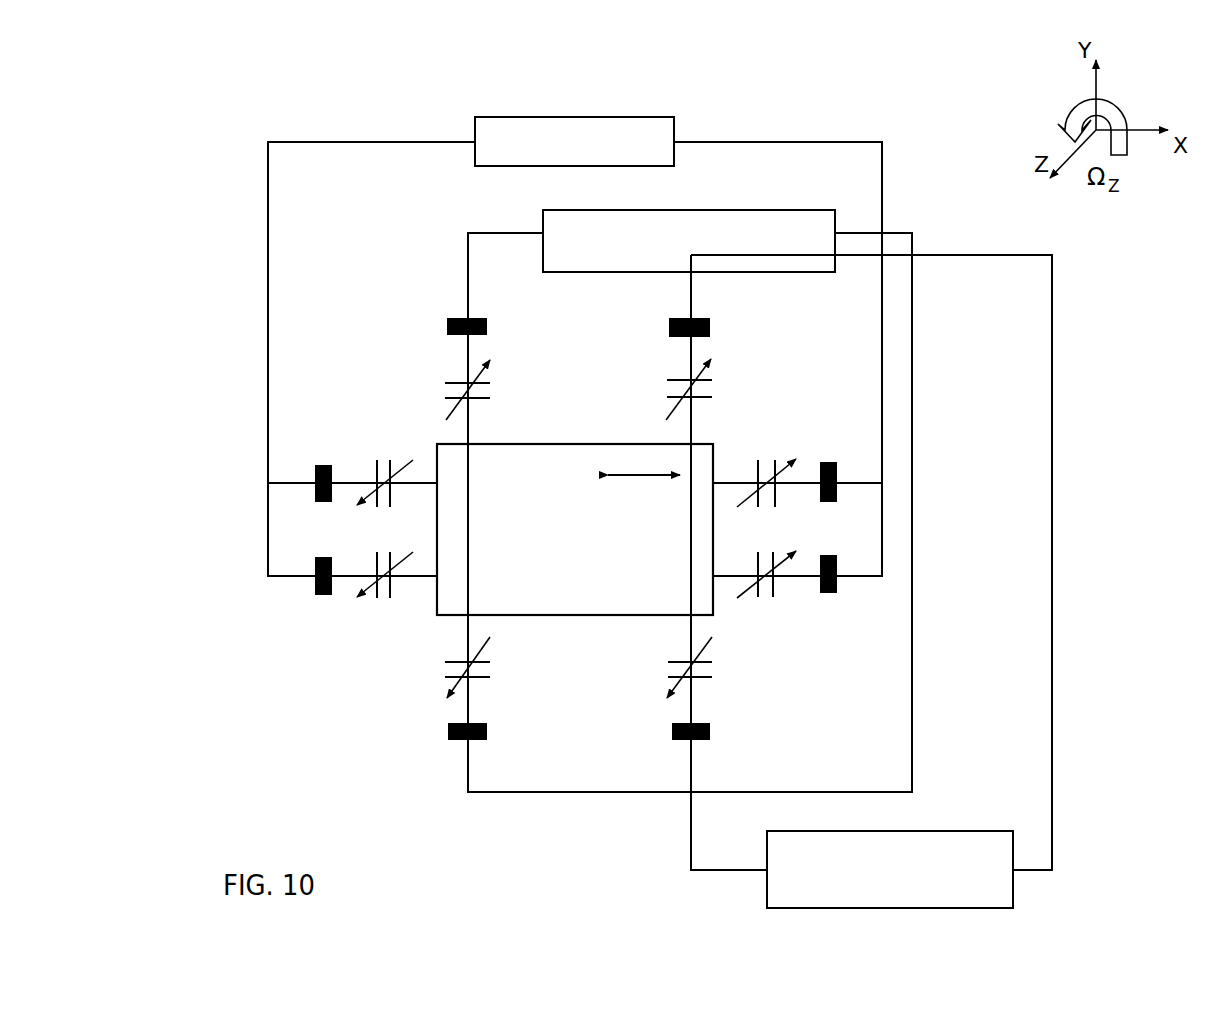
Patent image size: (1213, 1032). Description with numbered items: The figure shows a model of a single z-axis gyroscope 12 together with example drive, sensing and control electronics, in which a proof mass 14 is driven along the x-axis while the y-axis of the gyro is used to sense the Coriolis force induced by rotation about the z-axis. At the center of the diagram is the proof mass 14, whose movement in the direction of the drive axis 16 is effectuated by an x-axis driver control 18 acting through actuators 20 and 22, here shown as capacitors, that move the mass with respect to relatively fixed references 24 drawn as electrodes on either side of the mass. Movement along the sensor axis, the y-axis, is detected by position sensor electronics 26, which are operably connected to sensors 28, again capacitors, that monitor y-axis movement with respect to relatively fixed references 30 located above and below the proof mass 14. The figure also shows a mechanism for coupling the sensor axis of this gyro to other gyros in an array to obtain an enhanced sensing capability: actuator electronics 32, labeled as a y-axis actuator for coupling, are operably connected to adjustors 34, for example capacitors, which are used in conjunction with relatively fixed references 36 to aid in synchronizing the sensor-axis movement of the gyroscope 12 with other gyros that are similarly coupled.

The z-axis gyroscope 12 is at (231, 313).
The proof mass 14 is at (588, 565).
The drive axis 16 is at (574, 488).
The driver control 18 is at (557, 117).
The actuators 20 is at (377, 470).
The actuators 22 is at (768, 505).
The relatively fixed references 24 is at (315, 470).
The position sensor electronics 26 is at (775, 210).
The sensors 28 is at (395, 382).
The relatively fixed references 30 is at (447, 328).
The actuator electronics 32 is at (972, 831).
The adjustors 34 is at (755, 371).
The relatively fixed references 36 is at (710, 326).